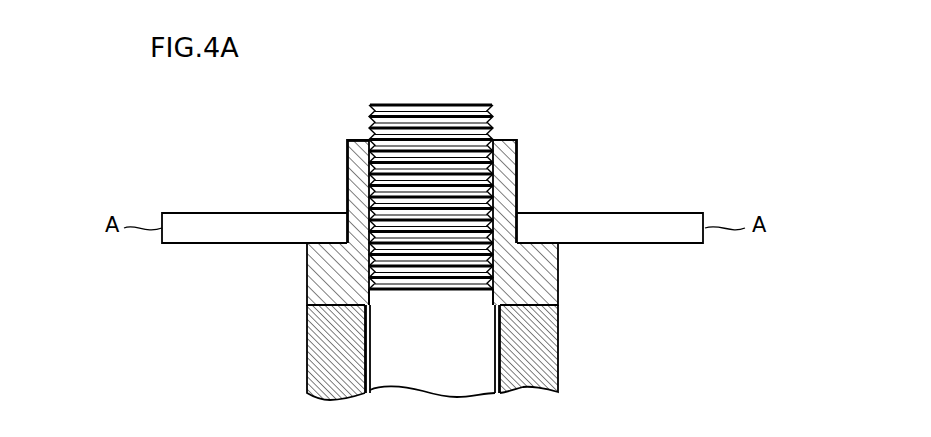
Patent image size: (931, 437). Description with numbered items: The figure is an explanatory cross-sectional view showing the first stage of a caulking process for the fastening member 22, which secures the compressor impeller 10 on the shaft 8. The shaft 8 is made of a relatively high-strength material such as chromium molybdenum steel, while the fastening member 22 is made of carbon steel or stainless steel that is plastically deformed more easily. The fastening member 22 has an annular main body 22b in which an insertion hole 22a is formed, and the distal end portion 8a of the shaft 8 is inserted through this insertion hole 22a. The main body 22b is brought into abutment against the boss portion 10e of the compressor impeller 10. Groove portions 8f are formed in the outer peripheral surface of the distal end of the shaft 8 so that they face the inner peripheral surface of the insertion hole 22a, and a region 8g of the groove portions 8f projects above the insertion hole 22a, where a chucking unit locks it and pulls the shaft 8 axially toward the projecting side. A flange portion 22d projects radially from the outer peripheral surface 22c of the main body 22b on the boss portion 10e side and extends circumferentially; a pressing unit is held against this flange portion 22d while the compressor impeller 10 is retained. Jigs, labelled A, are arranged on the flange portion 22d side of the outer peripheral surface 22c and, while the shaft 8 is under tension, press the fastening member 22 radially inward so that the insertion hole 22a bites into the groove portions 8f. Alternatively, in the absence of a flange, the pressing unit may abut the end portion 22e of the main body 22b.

The shaft 8 is at (407, 357).
The distal end portion 8a is at (452, 105).
The groove portions 8f is at (435, 290).
The region 8g is at (493, 118).
The compressor impeller 10 is at (558, 378).
The boss portion 10e is at (558, 348).
The fastening member 22 is at (347, 193).
The insertion hole 22a is at (372, 138).
The main body 22b is at (347, 163).
The outer peripheral surface 22c is at (517, 147).
The flange portion 22d is at (558, 277).
The end portion 22e is at (347, 138).